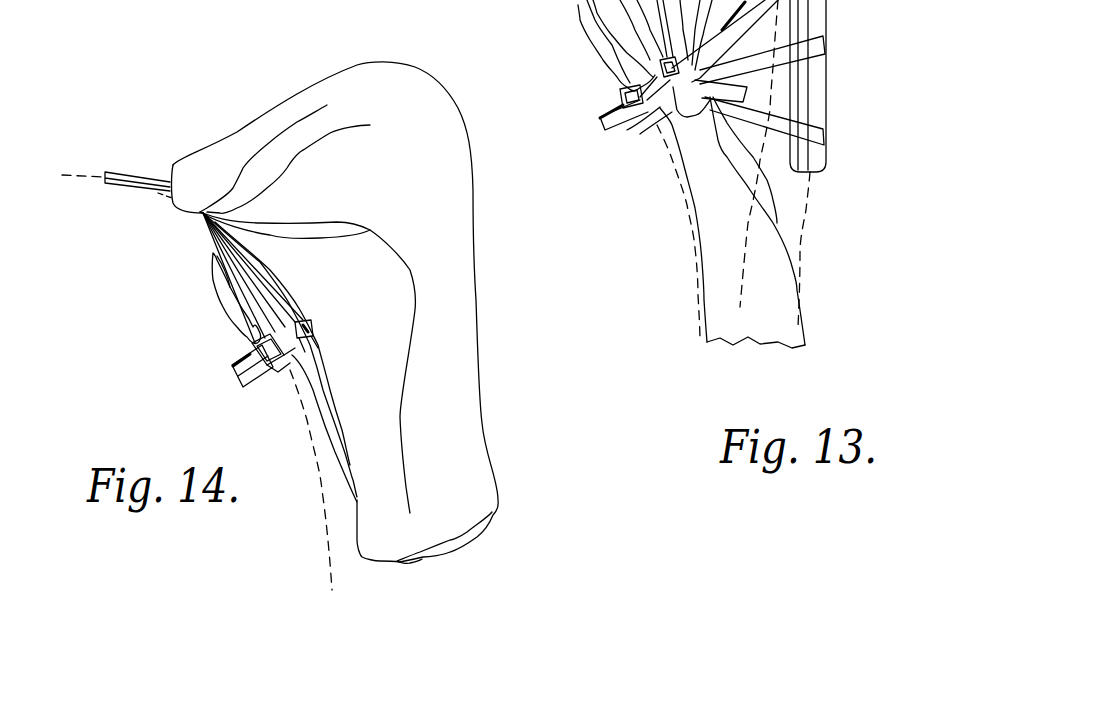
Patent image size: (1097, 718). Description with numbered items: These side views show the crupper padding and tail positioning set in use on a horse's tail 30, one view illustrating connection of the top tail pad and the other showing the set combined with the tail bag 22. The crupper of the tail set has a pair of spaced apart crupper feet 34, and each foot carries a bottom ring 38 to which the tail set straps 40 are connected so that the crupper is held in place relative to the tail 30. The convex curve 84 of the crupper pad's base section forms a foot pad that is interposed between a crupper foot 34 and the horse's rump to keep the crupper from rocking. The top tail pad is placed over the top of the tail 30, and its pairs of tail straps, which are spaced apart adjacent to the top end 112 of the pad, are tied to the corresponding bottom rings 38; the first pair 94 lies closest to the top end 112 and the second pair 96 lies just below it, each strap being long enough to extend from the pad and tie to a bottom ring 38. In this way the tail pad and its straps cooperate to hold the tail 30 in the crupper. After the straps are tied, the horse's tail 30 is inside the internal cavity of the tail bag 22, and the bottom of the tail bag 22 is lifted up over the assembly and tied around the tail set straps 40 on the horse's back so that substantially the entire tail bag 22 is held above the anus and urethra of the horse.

In FIG. 14, the tail bag 22 is at (472, 353).
In FIG. 13, the tail bag 22 is at (768, 333).
In FIG. 13, the horse's tail 30 is at (800, 245).
In FIG. 14, the crupper feet 34 is at (273, 287).
In FIG. 13, the crupper feet 34 is at (562, 0).
In FIG. 14, the bottom ring 38 is at (273, 353).
In FIG. 13, the bottom ring 38 is at (662, 66).
In FIG. 14, the tail set straps 40 is at (127, 180).
In FIG. 13, the tail set straps 40 is at (616, 124).
In FIG. 14, the convex curve 84 is at (228, 288).
In FIG. 13, the convex curve 84 is at (613, 40).
In FIG. 13, the first pair of tail straps 94 is at (820, 134).
In FIG. 13, the second pair of tail straps 96 is at (820, 42).
In FIG. 13, the top end 112 is at (818, 160).